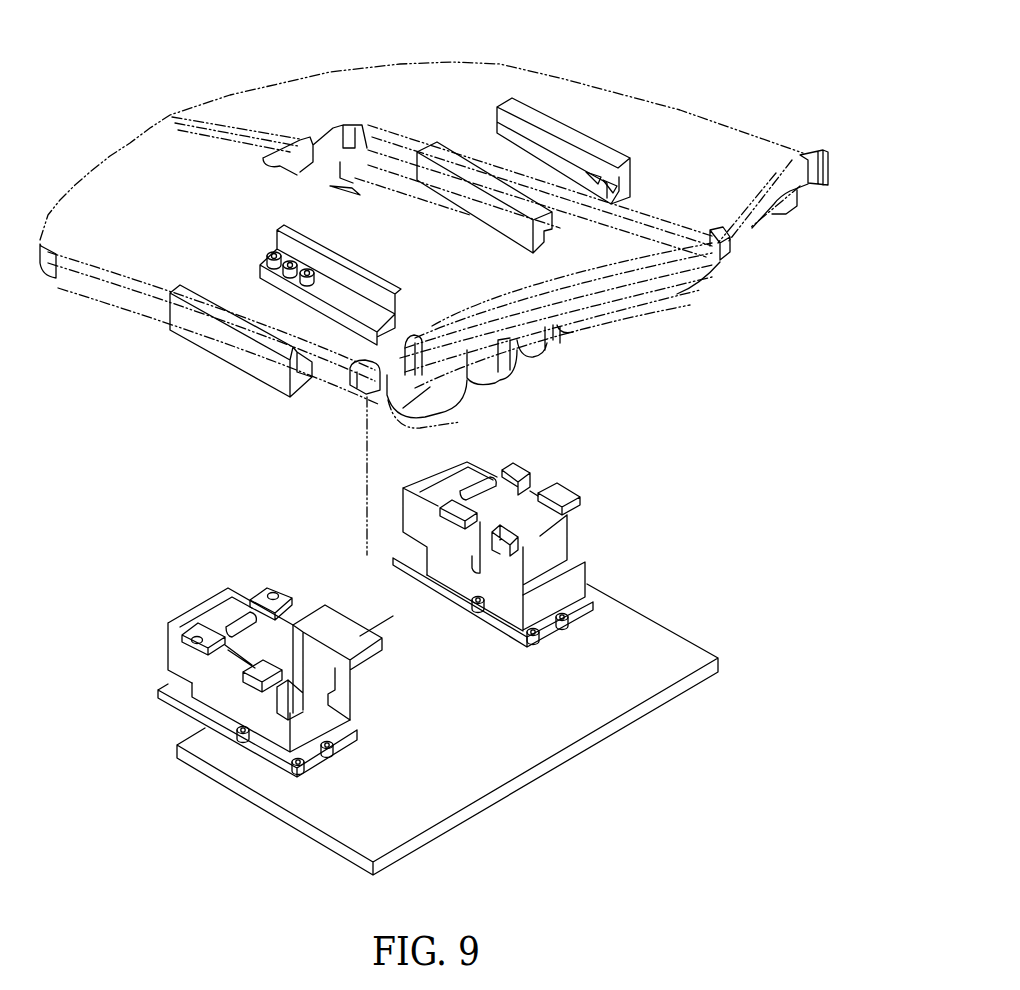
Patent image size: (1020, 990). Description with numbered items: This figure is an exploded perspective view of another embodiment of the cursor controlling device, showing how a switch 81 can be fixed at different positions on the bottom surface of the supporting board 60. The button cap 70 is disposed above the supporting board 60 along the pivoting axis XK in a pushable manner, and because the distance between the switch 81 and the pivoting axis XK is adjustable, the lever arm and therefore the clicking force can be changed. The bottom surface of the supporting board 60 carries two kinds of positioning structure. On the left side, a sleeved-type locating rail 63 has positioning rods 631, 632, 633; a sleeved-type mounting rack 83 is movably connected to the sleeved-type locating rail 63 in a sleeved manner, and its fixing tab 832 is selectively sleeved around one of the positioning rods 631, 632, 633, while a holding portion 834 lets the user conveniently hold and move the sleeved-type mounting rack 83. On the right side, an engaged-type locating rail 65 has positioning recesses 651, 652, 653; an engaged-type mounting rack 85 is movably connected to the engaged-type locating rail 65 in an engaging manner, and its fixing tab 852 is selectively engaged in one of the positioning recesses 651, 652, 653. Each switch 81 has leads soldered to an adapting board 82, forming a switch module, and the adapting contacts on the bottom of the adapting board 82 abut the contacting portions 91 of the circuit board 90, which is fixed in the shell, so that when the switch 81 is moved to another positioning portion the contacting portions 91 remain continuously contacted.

The supporting board 60 is at (655, 320).
The button cap 70 is at (737, 110).
The sleeved-type locating rail 63 is at (327, 307).
The positioning rod 631 is at (272, 252).
The positioning rod 632 is at (291, 262).
The positioning rod 633 is at (308, 270).
The engaged-type locating rail 65 is at (544, 126).
The positioning recess 651 is at (587, 173).
The positioning recess 652 is at (597, 180).
The positioning recess 653 is at (607, 187).
The pivoting axis XK is at (450, 423).
The switch 81 is at (222, 617).
The adapting board 82 is at (227, 730).
The sleeved-type mounting rack 83 is at (217, 697).
The fixing tab 832 is at (262, 592).
The holding portion 834 is at (332, 630).
The engaged-type mounting rack 85 is at (572, 578).
The fixing tab 852 is at (553, 493).
The circuit board 90 is at (685, 630).
The contacting portion 91 is at (310, 770).